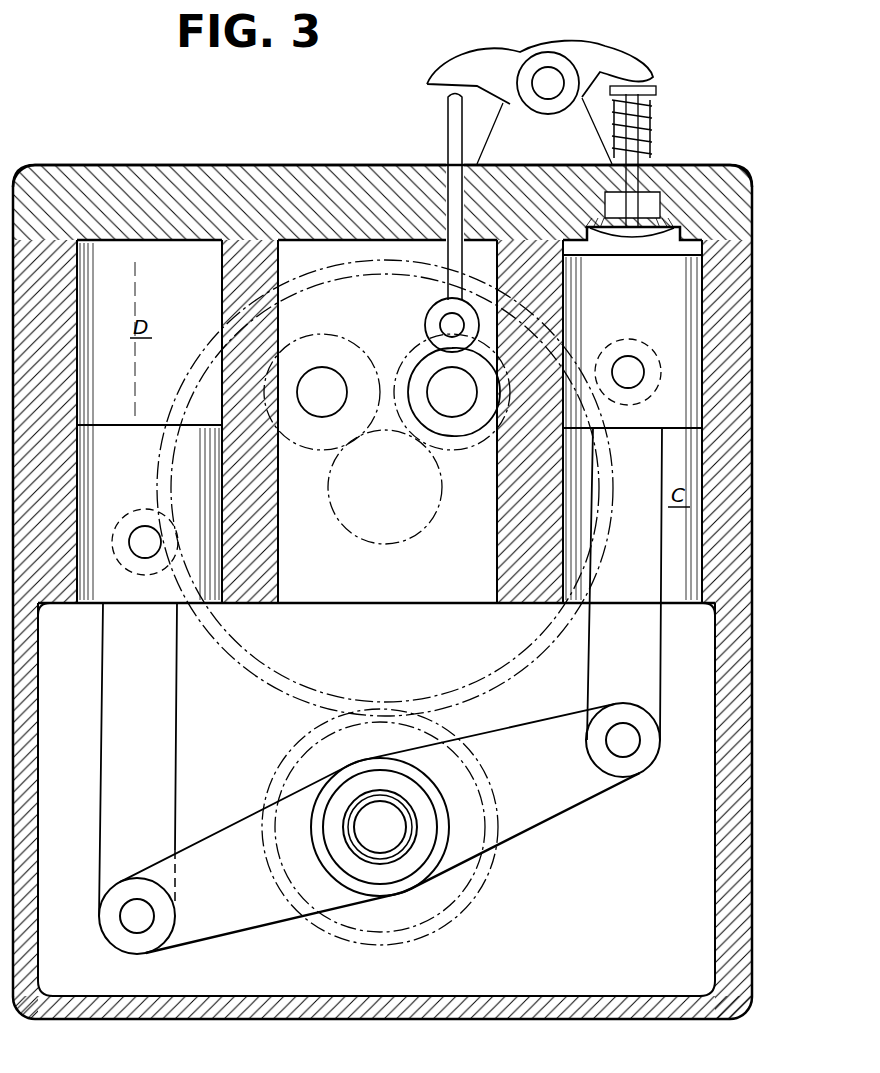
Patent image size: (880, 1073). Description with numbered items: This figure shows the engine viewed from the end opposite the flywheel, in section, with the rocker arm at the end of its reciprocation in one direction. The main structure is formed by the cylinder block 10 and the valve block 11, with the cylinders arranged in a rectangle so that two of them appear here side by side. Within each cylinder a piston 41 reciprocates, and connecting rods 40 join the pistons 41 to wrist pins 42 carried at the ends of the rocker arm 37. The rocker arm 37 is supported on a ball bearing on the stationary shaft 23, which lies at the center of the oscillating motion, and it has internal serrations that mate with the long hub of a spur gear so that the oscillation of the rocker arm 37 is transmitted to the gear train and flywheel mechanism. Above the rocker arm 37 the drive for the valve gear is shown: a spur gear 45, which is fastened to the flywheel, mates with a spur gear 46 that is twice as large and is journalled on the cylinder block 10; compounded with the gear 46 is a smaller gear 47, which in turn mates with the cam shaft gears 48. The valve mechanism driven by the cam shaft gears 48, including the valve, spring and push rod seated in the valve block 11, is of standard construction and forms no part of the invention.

The cylinder block 10 is at (742, 330).
The valve block 11 is at (233, 171).
The stationary shaft 23 is at (398, 843).
The rocker arm 37 is at (273, 920).
The connecting rods 40 is at (110, 720).
The pistons 41 is at (142, 478).
The wrist pins 42 is at (136, 928).
The spur gear 45 is at (292, 757).
The spur gear 46 is at (283, 692).
The smaller gear 47 is at (388, 542).
The cam shaft gears 48 is at (418, 354).